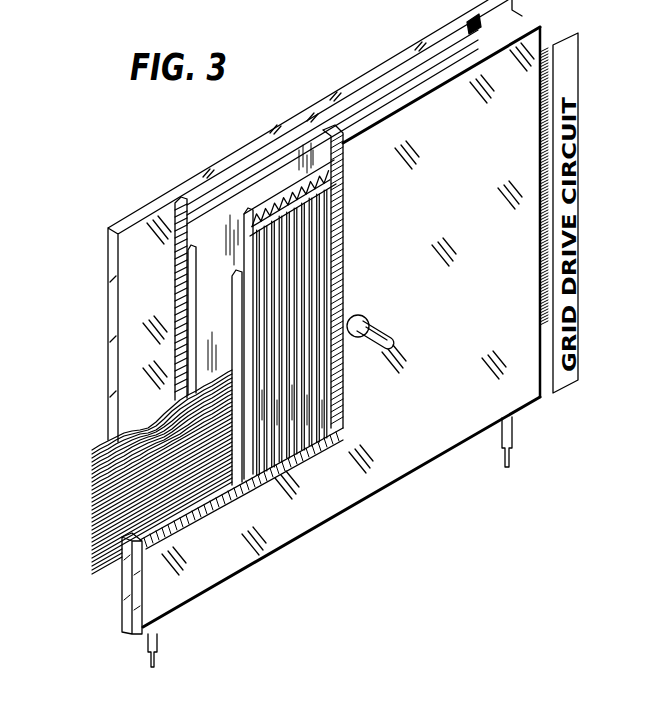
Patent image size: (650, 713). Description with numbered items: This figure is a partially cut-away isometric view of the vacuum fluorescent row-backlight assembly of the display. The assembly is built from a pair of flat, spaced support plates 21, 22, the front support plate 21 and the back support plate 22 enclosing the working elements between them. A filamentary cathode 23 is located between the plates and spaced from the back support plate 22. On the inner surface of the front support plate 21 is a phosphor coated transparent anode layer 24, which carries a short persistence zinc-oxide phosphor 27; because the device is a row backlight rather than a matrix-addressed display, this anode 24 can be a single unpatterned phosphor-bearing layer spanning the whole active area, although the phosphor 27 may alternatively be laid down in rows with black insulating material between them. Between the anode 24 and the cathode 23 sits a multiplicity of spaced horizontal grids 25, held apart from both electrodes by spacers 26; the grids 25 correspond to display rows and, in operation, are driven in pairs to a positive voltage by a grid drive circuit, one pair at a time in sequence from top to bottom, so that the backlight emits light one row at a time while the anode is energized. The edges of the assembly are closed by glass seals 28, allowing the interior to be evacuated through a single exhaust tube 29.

The front support plate 21 is at (181, 186).
The back support plate 22 is at (276, 530).
The filamentary cathode 23 is at (298, 427).
The phosphor coated transparent anode layer 24 is at (410, 60).
The horizontal grids 25 is at (92, 489).
The spacers 26 is at (233, 324).
The phosphor 27 is at (257, 173).
The glass seals 28 is at (522, 13).
The exhaust tube 29 is at (392, 344).